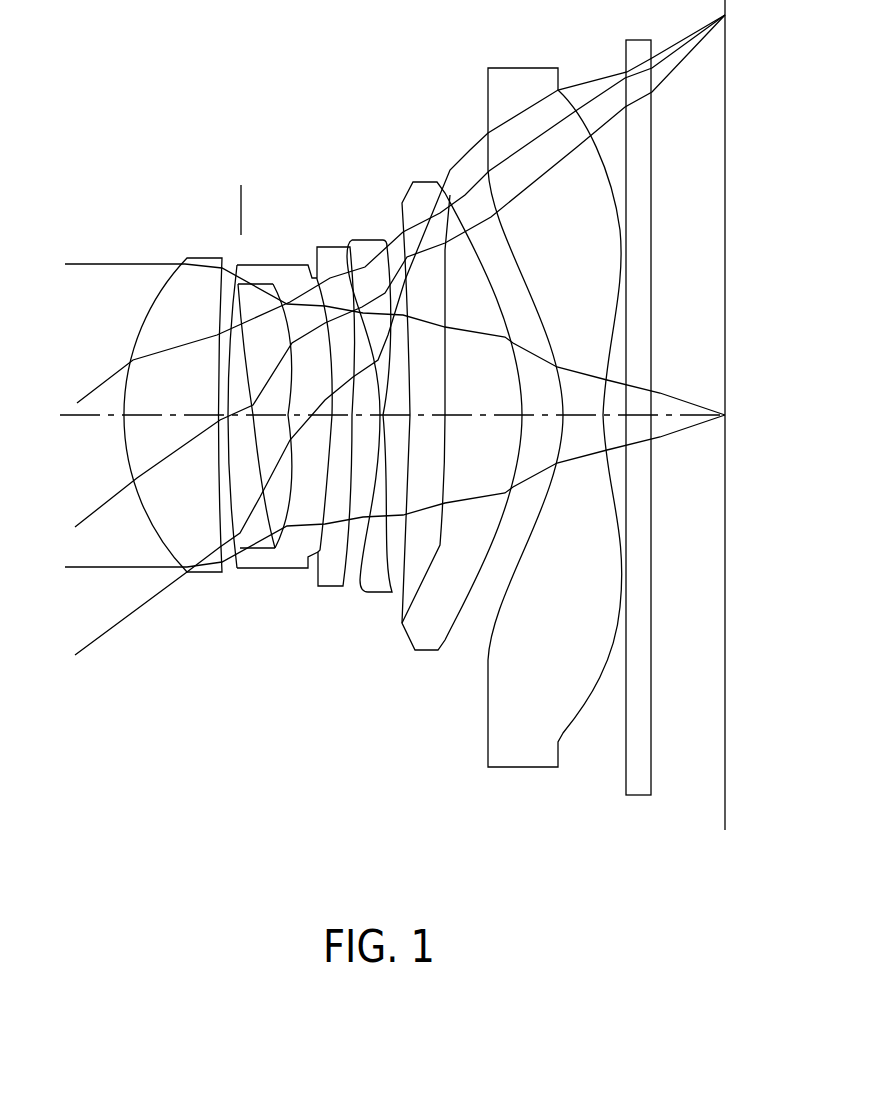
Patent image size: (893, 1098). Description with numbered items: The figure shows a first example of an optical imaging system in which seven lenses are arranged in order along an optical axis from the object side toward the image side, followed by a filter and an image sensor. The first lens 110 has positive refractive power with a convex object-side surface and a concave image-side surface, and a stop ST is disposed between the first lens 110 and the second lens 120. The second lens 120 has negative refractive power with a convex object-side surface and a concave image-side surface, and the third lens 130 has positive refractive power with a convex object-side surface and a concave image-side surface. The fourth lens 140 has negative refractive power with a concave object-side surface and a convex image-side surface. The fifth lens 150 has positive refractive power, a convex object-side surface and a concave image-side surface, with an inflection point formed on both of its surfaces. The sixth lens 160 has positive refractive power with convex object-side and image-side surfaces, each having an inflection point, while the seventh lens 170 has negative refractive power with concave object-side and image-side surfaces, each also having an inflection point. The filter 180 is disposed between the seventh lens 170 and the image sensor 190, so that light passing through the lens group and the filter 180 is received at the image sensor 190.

The stop ST is at (240, 210).
The first lens 110 is at (203, 574).
The second lens 120 is at (242, 538).
The third lens 130 is at (278, 569).
The fourth lens 140 is at (330, 587).
The fifth lens 150 is at (372, 593).
The sixth lens 160 is at (426, 651).
The seventh lens 170 is at (520, 768).
The filter 180 is at (628, 796).
The image sensor 190 is at (725, 831).